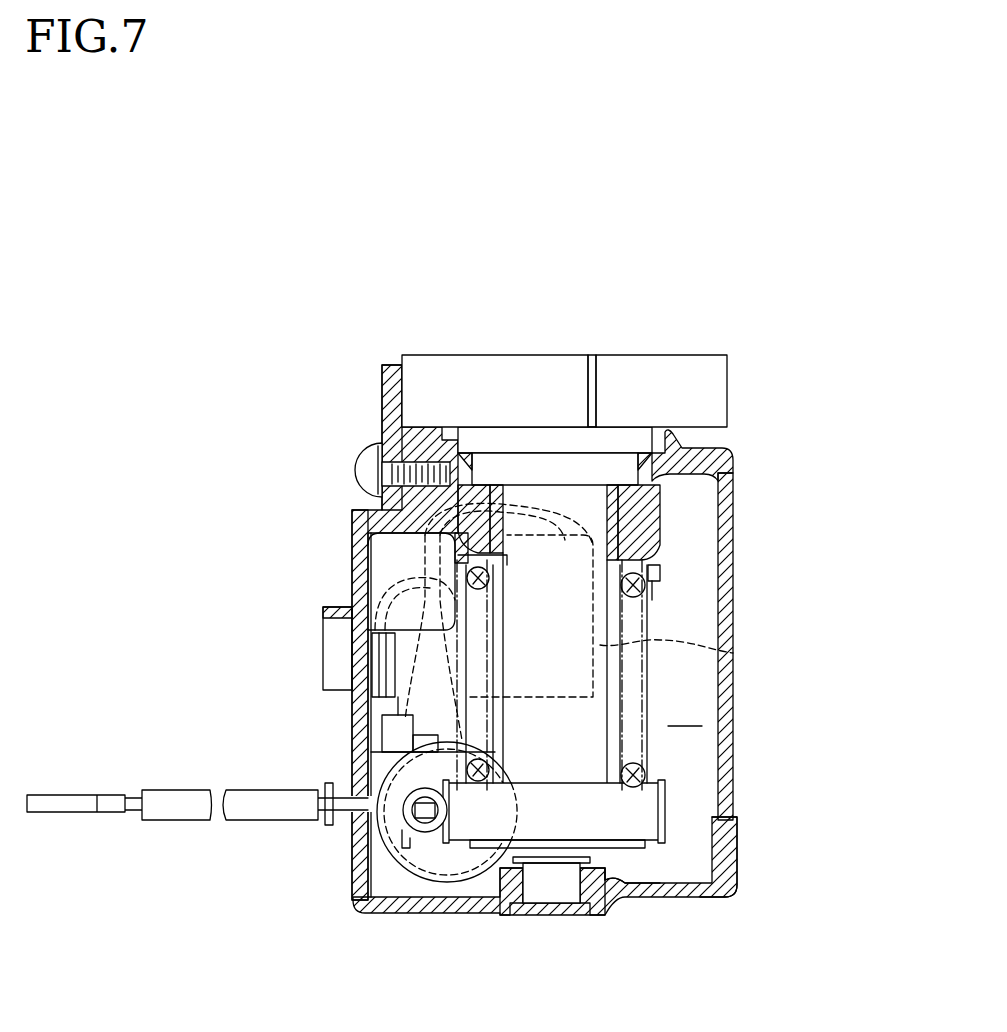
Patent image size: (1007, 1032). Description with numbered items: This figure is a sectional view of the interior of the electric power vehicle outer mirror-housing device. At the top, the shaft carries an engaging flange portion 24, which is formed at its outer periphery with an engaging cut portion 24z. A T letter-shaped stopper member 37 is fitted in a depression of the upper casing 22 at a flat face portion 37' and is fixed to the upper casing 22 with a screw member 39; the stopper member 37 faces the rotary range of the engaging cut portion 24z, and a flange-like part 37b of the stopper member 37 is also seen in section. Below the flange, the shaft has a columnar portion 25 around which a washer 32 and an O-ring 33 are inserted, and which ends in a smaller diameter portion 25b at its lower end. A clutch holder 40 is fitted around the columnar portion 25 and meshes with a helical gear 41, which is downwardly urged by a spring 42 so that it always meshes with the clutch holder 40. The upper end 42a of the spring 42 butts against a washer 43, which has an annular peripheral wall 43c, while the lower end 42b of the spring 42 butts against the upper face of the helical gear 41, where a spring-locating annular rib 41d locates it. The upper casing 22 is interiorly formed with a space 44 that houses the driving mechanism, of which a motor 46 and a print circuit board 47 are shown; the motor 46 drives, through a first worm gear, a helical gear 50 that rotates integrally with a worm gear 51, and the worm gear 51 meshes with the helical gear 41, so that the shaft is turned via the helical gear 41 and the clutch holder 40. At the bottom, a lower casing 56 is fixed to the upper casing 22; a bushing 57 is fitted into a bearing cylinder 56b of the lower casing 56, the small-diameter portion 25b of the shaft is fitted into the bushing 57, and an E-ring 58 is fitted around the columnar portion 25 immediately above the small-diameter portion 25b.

The engaging flange portion 24 is at (535, 351).
The engaging cut portion 24z is at (602, 384).
The flange portion 37b is at (390, 363).
The stopper member 37 is at (366, 632).
The screw member 39 is at (355, 470).
The flat face portion 37' is at (316, 705).
The print circuit board 47 is at (392, 652).
The columnar portion 25 is at (533, 720).
The O-ring 33 is at (660, 462).
The washer 32 is at (642, 490).
The upper casing 22 is at (737, 541).
The washer 43 is at (665, 558).
The annular peripheral wall 43c is at (652, 566).
The upper end of the spring 42a is at (652, 580).
The motor 46 is at (733, 653).
The spring 42 is at (620, 672).
The space 44 is at (685, 710).
The lower end of the spring 42b is at (645, 772).
The helical gear 41 is at (668, 798).
The lower casing 56 is at (745, 848).
The clutch holder 40 is at (722, 888).
The E-ring 58 is at (648, 870).
The bearing cylinder 56b is at (612, 868).
The bushing 57 is at (596, 880).
The smaller diameter portion 25b is at (553, 882).
The spring-locating annular rib 41d is at (505, 870).
The helical gear 50 is at (440, 876).
The worm gear 51 is at (420, 848).